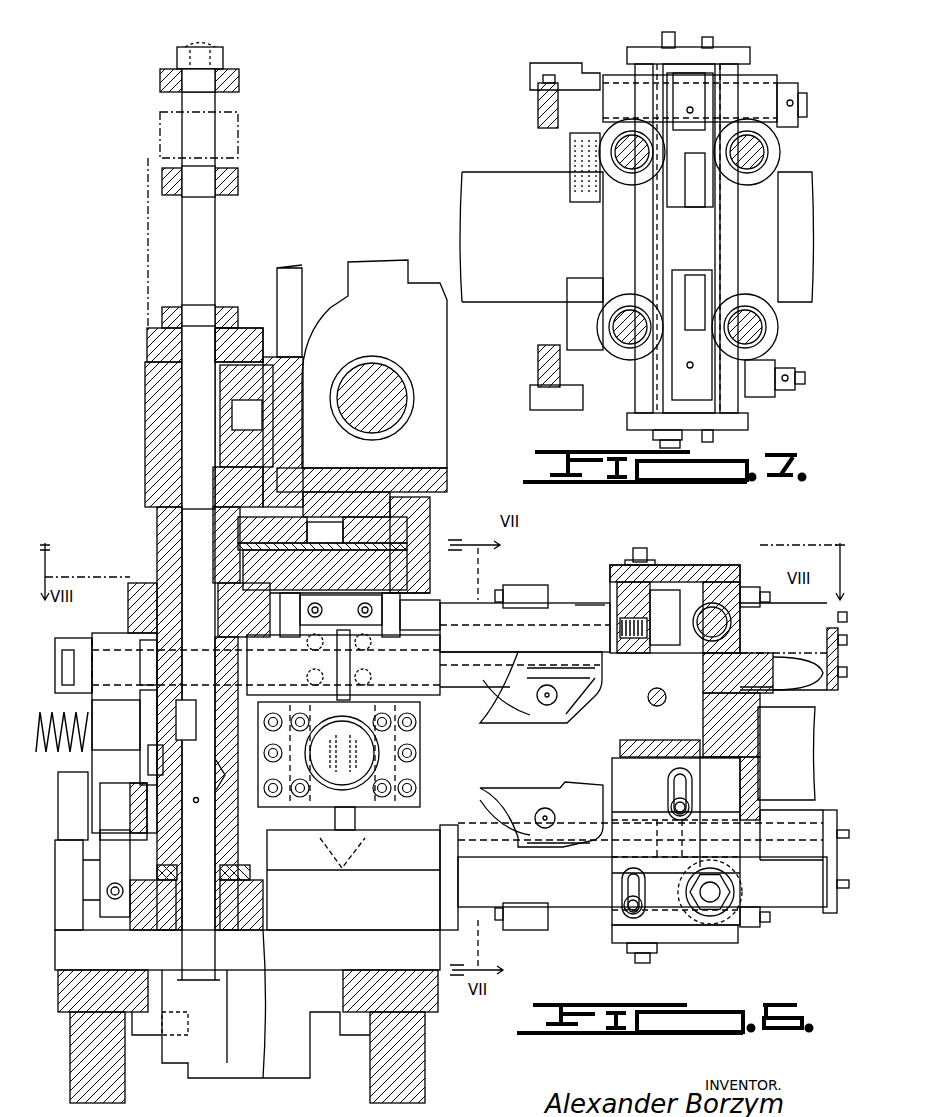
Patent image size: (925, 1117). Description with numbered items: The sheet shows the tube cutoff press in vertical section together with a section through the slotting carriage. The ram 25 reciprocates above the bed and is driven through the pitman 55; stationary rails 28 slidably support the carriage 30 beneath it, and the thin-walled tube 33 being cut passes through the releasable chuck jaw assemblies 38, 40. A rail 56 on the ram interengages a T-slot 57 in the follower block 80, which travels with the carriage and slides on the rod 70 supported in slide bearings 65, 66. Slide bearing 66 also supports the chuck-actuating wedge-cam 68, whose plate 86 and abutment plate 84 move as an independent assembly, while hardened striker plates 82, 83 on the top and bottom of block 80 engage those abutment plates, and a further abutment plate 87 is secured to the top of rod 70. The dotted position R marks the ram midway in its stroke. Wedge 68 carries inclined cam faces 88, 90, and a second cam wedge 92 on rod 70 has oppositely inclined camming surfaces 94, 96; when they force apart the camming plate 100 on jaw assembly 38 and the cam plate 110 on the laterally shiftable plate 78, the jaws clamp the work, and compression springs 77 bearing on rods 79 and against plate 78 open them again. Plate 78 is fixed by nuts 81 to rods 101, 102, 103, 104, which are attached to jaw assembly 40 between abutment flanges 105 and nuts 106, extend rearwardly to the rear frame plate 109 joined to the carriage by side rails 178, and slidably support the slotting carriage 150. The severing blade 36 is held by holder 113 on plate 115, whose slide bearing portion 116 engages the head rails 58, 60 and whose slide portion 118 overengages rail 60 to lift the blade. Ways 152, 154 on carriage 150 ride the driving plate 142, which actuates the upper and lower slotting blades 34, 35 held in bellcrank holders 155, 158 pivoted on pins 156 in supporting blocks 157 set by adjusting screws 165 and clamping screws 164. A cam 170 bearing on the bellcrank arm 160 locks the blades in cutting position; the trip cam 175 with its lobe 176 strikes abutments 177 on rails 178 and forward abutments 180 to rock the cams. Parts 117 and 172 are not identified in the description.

In FIG. 5, the ram 25 is at (290, 268).
In FIG. 5, the stationary rails 28 is at (62, 1000).
In FIG. 5, the carriage 30 is at (54, 900).
In FIG. 5, the thin-walled metal tube 33 is at (342, 753).
In FIG. 5, the upper slotting blade 34 is at (510, 725).
In FIG. 5, the lower slotting blade 35 is at (500, 795).
In FIG. 5, the severing blade 36 is at (385, 810).
In FIG. 5, the chuck jaw assembly 38 is at (324, 808).
In FIG. 5, the chuck jaw assembly 40 is at (359, 803).
In FIG. 5, the pitman 55 is at (378, 272).
In FIG. 5, the rail 56 is at (246, 416).
In FIG. 5, the longitudinal T-slot 57 is at (228, 360).
In FIG. 5, the head rail 58 is at (296, 510).
In FIG. 5, the head rail 60 is at (430, 505).
In FIG. 5, the slide bearing 65 is at (165, 920).
In FIG. 5, the slide bearing 66 is at (135, 605).
In FIG. 5, the chuck actuating wedge-cam 68 is at (160, 682).
In FIG. 5, the rod 70 is at (198, 220).
In FIG. 5, the compression springs 77 is at (58, 760).
In FIG. 5, the laterally shiftable plate 78 is at (116, 725).
In FIG. 5, the rods 79 is at (60, 690).
In FIG. 5, the follower block 80 is at (147, 415).
In FIG. 5, the nuts 81 is at (66, 640).
In FIG. 5, the hardened striker plate 82 is at (162, 316).
In FIG. 5, the hardened striker plate 83 is at (157, 507).
In FIG. 5, the abutment plate 84 is at (162, 183).
In FIG. 5, the abutment plate 86 is at (157, 527).
In FIG. 5, the abutment plate 87 is at (160, 77).
In FIG. 5, the inclined lower front cam face 88 is at (165, 760).
In FIG. 5, the inclined lower rear cam face 90 is at (212, 750).
In FIG. 5, the second cam wedge 92 is at (160, 840).
In FIG. 5, the inclined camming surface 94 is at (147, 790).
In FIG. 5, the inclined camming surface 96 is at (218, 783).
In FIG. 5, the camming plate 100 is at (250, 700).
In FIG. 5, the rod 101 is at (475, 660).
In FIG. 7, the rod 101 is at (633, 160).
In FIG. 7, the rod 102 is at (755, 152).
In FIG. 5, the rod 103 is at (475, 860).
In FIG. 7, the rod 103 is at (625, 322).
In FIG. 7, the rod 104 is at (760, 327).
In FIG. 5, the abutment flanges 105 is at (435, 700).
In FIG. 5, the nuts 106 is at (343, 632).
In FIG. 5, the rear frame plate 109 is at (835, 690).
In FIG. 5, the cam plate 110 is at (145, 710).
In FIG. 5, the holder 113 is at (420, 606).
In FIG. 5, the plate 115 is at (334, 568).
In FIG. 5, the horizontal slide bearing portion 116 is at (346, 550).
In FIG. 5, the spacer 117 is at (274, 555).
In FIG. 5, the slide portion 118 is at (430, 528).
In FIG. 5, the platelike rail 142 is at (762, 735).
In FIG. 5, the slotting carriage 150 is at (704, 553).
In FIG. 7, the slotting carriage 150 is at (750, 44).
In FIG. 5, the way 152 is at (760, 655).
In FIG. 5, the way 154 is at (790, 865).
In FIG. 5, the holder 155 is at (590, 750).
In FIG. 5, the pin 156 is at (648, 700).
In FIG. 5, the supporting blocks 157 is at (615, 638).
In FIG. 5, the holder 158 is at (600, 790).
In FIG. 5, the bellcrank arm 160 is at (670, 600).
In FIG. 5, the clamping screws 164 is at (635, 870).
In FIG. 5, the adjusting screws 165 is at (635, 552).
In FIG. 7, the adjusting screws 165 is at (668, 32).
In FIG. 5, the cam 170 is at (710, 640).
In FIG. 5, the fitting 172 is at (748, 590).
In FIG. 7, the trip cam 175 is at (597, 76).
In FIG. 5, the lobe 176 is at (700, 575).
In FIG. 5, the abutments 177 is at (748, 930).
In FIG. 5, the side rails 178 is at (578, 608).
In FIG. 7, the side rails 178 is at (538, 365).
In FIG. 5, the forward abutments 180 is at (520, 588).
In FIG. 5, the initial ram position R is at (143, 264).